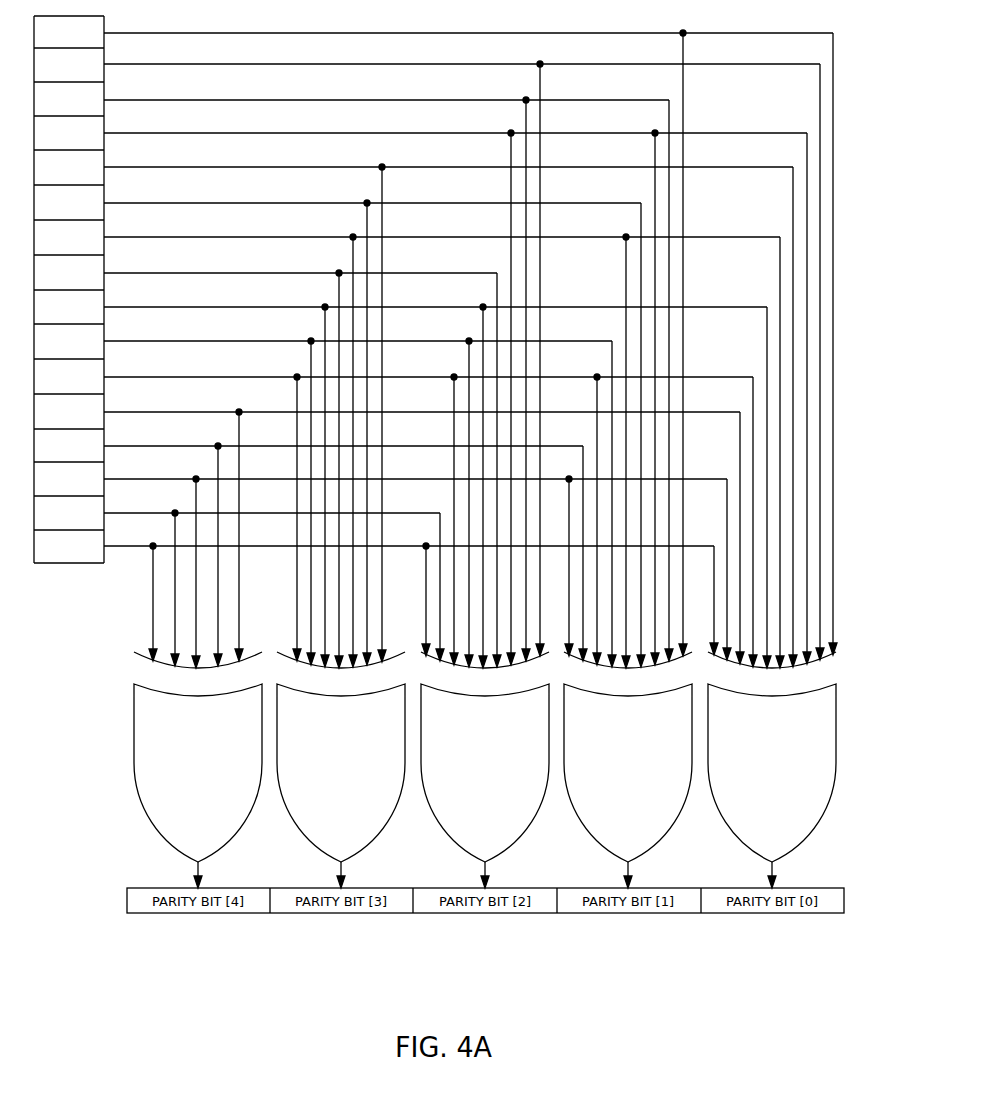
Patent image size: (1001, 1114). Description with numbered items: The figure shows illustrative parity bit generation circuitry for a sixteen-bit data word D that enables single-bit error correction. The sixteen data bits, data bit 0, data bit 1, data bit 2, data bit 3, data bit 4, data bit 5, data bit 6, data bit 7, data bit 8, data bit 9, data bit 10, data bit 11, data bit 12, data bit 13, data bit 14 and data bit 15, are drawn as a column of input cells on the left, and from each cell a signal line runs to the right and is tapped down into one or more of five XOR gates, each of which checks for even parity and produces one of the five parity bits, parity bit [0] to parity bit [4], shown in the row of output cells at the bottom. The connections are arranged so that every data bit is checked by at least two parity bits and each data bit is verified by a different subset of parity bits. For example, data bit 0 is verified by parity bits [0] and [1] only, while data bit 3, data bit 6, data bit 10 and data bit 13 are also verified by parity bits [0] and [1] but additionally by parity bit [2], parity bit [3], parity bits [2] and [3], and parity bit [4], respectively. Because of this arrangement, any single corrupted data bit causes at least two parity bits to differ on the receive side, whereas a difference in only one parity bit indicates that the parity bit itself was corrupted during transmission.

The data bit D[0] 0 is at (445, 339).
The data bit D[1] 1 is at (438, 356).
The data bit D[2] 2 is at (363, 375).
The data bit D[3] 3 is at (432, 393).
The data bit D[4] 4 is at (425, 411).
The data bit D[5] 5 is at (349, 429).
The data bit D[6] 6 is at (418, 447).
The data bit D[7] 7 is at (277, 465).
The data bit D[8] 8 is at (412, 482).
The data bit D[9] 9 is at (334, 498).
The data bit D[10] 10 is at (401, 516).
The data bit D[11] 11 is at (395, 532).
The data bit D[12] 12 is at (316, 550).
The data bit D[13] 13 is at (388, 568).
The data bit D[14] 14 is at (245, 584).
The data bit D[15] 15 is at (382, 598).